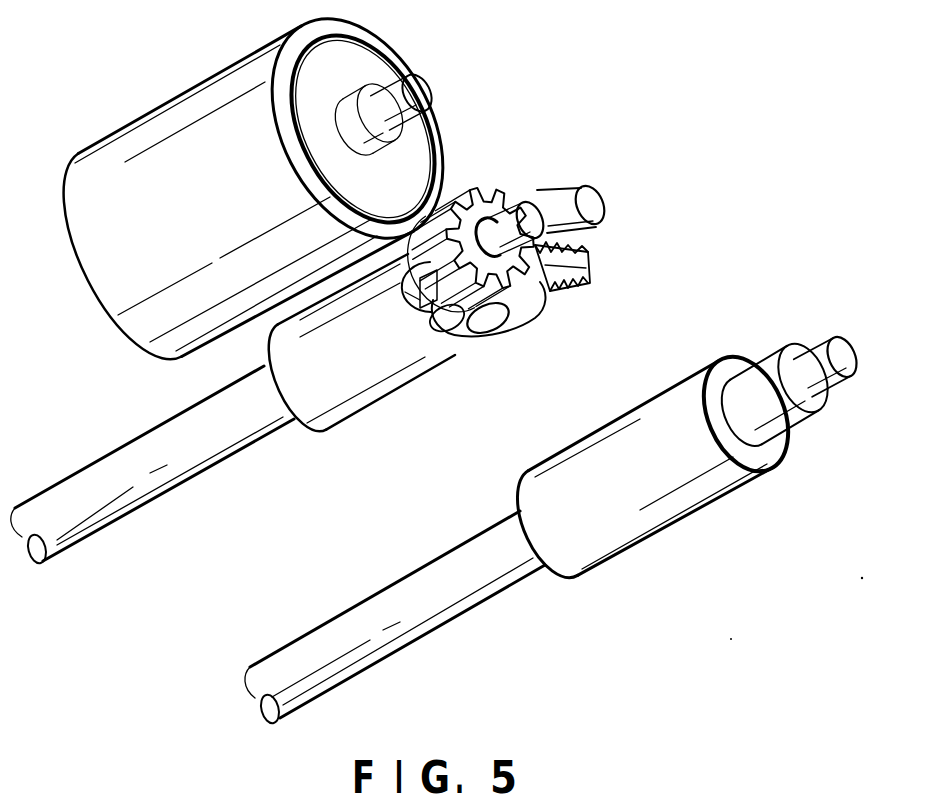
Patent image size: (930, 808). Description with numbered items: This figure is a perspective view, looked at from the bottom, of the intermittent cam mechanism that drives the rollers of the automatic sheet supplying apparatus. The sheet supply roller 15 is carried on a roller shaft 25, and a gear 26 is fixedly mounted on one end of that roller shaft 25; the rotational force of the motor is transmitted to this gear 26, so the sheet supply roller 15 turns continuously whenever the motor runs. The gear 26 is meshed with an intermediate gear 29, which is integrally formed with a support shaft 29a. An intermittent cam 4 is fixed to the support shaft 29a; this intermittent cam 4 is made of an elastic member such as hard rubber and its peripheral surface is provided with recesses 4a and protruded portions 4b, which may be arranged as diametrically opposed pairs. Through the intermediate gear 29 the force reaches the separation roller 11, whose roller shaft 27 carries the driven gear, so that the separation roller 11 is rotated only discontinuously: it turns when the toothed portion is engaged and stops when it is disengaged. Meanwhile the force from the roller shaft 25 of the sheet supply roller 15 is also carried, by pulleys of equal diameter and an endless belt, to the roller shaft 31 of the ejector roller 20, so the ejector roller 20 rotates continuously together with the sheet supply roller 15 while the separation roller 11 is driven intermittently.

The separation roller 11 is at (160, 124).
The roller shaft 27 is at (420, 91).
The intermediate gear 29 is at (490, 188).
The support shaft 29a is at (532, 203).
The roller shaft 25 is at (180, 460).
The gear 26 is at (592, 249).
The intermittent cam 4 is at (497, 320).
The recesses 4a is at (436, 306).
The protruded portions 4b is at (472, 321).
The sheet supply roller 15 is at (365, 387).
The roller shaft 31 is at (355, 622).
The ejector roller 20 is at (662, 512).